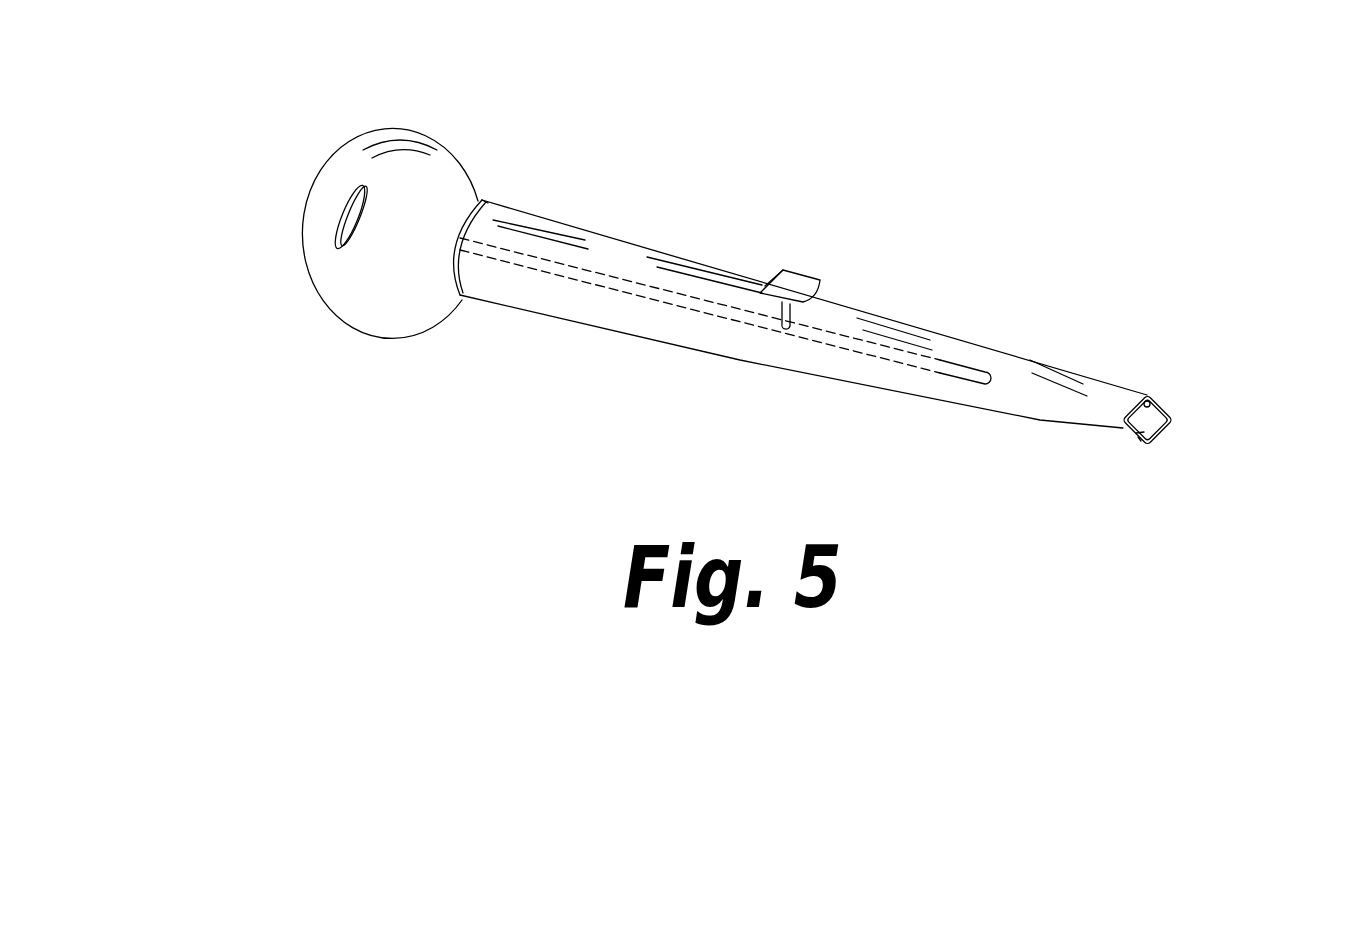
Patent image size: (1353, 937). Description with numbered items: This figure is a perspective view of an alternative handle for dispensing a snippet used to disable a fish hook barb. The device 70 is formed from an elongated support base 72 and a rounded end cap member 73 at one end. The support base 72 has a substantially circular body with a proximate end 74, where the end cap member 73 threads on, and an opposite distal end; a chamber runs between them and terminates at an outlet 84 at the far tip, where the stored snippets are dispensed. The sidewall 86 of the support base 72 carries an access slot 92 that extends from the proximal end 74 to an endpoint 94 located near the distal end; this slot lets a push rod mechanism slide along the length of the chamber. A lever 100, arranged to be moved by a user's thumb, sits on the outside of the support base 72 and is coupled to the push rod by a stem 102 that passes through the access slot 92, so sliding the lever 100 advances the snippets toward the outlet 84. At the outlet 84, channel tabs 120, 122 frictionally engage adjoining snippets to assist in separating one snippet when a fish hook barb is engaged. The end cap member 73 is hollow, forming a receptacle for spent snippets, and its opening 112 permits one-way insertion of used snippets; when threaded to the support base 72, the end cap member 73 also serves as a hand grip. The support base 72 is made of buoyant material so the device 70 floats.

The device 70 is at (985, 153).
The support base 72 is at (1083, 378).
The end cap member 73 is at (412, 117).
The proximate end 74 is at (465, 233).
The outlet 84 is at (1143, 442).
The sidewall 86 is at (897, 335).
The access slot 92 is at (705, 307).
The endpoint 94 is at (993, 377).
The lever 100 is at (795, 277).
The stem 102 is at (785, 328).
The opening 112 is at (342, 212).
The channel tab 120 is at (1162, 438).
The channel tab 122 is at (1147, 397).